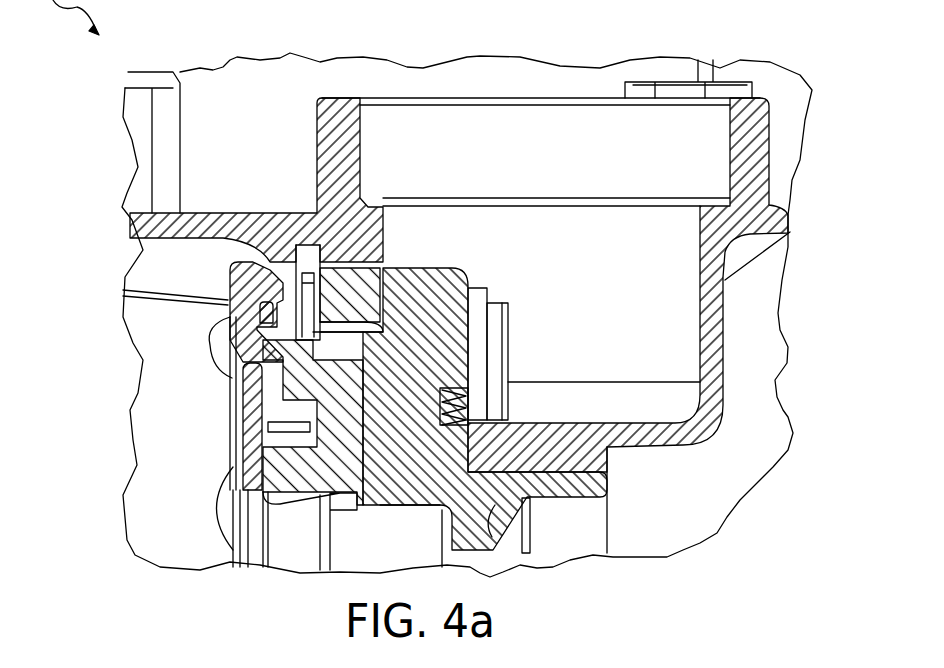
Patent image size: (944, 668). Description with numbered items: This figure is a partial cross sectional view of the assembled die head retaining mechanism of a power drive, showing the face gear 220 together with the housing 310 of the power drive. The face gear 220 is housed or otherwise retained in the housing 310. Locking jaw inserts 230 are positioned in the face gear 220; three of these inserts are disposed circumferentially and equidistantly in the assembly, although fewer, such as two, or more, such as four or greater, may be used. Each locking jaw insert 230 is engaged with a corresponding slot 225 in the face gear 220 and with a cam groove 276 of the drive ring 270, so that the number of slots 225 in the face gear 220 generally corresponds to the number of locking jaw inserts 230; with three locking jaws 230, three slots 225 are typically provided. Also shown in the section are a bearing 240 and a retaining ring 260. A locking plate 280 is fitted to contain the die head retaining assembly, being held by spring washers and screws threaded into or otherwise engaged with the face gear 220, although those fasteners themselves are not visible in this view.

The face gear 220 is at (437, 338).
The slots 225 is at (357, 457).
The locking jaw inserts 230 is at (300, 462).
The bearing 240 is at (355, 262).
The retaining ring 260 is at (303, 253).
The drive ring 270 is at (240, 332).
The cam grooves 276 is at (267, 377).
The locking plate 280 is at (247, 460).
The housing 310 is at (753, 220).